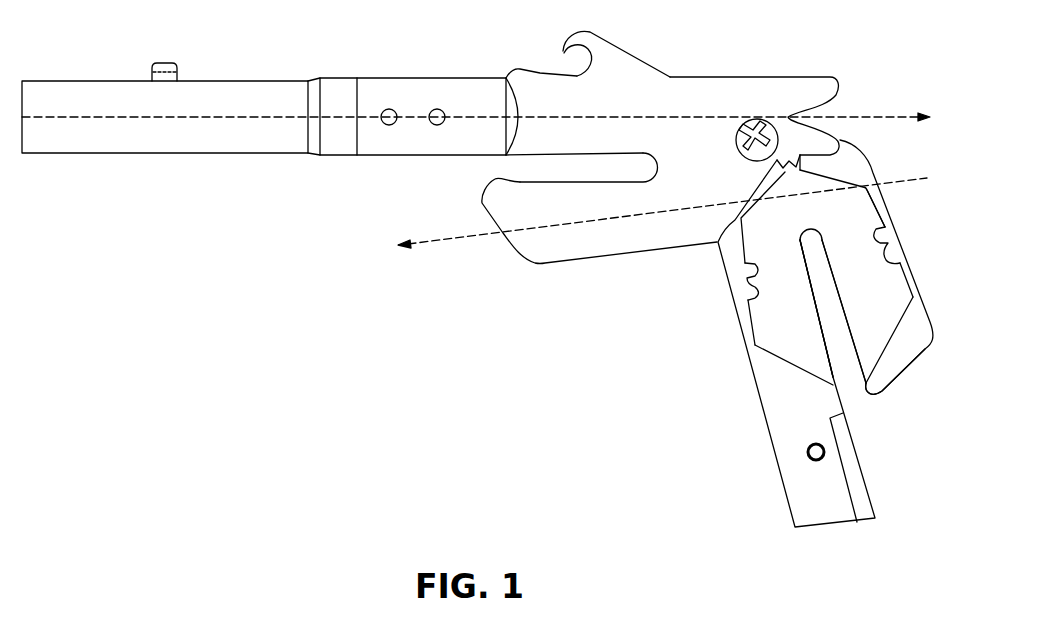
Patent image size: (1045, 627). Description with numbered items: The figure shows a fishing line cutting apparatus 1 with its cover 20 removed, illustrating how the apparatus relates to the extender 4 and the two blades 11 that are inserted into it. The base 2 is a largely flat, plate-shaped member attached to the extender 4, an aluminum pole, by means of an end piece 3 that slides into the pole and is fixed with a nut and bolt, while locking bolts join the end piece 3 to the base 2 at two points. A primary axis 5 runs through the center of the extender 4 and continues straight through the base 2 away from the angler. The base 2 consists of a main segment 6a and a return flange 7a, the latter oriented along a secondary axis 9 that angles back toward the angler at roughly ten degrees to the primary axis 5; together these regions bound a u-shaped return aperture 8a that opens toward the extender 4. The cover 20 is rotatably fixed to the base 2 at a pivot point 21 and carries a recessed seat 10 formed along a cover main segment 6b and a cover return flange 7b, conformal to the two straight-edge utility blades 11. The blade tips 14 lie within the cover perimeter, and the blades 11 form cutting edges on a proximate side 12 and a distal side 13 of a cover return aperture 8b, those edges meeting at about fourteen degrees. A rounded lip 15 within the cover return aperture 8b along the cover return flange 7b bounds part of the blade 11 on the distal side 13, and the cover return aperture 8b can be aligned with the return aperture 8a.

The fishing line cutting apparatus 1 is at (121, 53).
The base 2 is at (754, 105).
The end piece 3 is at (419, 116).
The extender 4 is at (171, 116).
The primary axis 5 is at (476, 107).
The main segment 6a is at (588, 93).
The cover main segment 6b is at (796, 341).
The return flange 7a is at (599, 220).
The cover return flange 7b is at (867, 267).
The return aperture 8a is at (589, 167).
The cover return aperture 8b is at (833, 311).
The secondary axis 9 is at (653, 214).
The seat 10 is at (809, 223).
The blades 11 is at (876, 247).
The proximate side 12 is at (811, 308).
The distal side 13 is at (844, 311).
The blade tips 14 is at (829, 261).
The rounded lip 15 is at (889, 378).
The cover 20 is at (875, 467).
The pivot point 21 is at (745, 140).